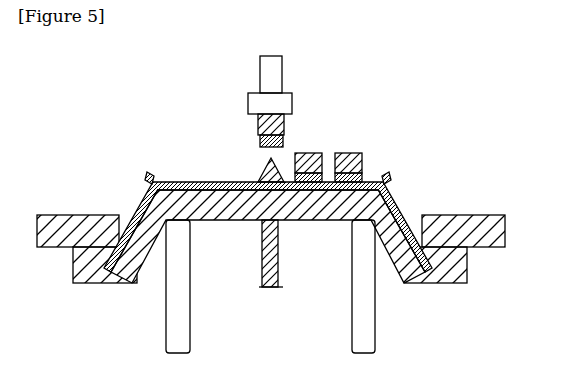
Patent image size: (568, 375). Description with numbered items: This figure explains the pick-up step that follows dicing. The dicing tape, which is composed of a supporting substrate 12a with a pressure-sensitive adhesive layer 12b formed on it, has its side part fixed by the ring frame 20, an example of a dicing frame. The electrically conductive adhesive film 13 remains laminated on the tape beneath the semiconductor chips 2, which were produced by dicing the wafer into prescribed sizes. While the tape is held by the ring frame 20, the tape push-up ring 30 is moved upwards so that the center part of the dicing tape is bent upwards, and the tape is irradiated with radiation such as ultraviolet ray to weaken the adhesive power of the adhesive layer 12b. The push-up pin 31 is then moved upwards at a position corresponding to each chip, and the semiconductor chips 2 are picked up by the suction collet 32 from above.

The semiconductor chip 2 is at (258, 124).
The electrically conductive adhesive film 13 is at (259, 141).
The suction collet 32 is at (293, 103).
The push-up pin 31 is at (279, 258).
The tape push-up ring 30 is at (376, 322).
The ring frame 20 is at (470, 213).
The supporting substrate 12a is at (477, 282).
The pressure-sensitive adhesive layer 12b is at (472, 243).